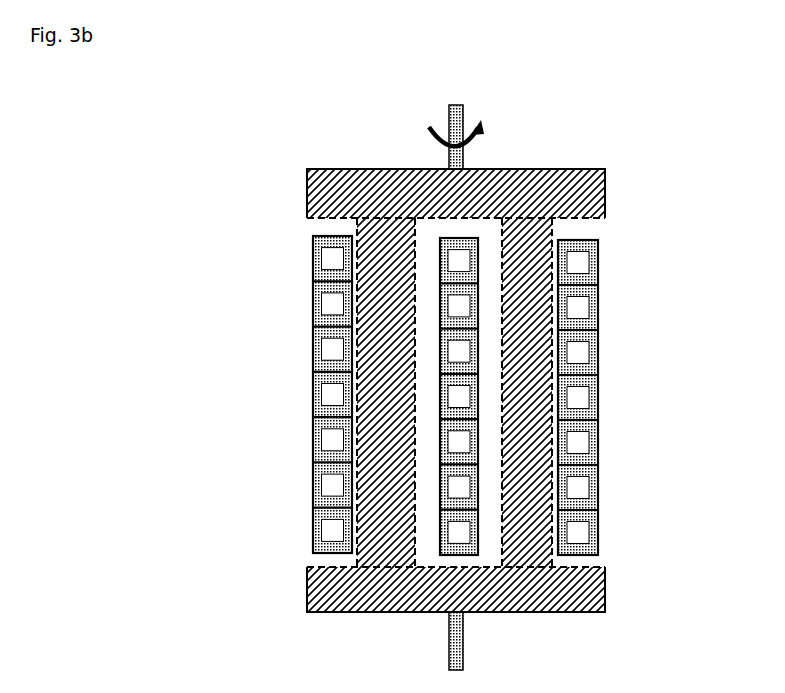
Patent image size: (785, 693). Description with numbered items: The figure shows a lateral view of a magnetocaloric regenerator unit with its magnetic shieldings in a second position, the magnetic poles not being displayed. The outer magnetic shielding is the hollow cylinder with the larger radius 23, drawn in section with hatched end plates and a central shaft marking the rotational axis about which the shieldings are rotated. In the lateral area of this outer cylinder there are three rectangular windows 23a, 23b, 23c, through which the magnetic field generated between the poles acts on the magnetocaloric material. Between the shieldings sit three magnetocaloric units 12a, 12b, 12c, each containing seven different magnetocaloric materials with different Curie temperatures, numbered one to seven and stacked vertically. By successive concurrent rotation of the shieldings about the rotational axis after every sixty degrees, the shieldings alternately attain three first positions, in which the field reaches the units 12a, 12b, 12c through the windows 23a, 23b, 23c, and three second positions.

The hollow cylinder with the larger radius 23 is at (330, 587).
The window 23a is at (356, 228).
The window 23b is at (412, 428).
The window 23c is at (557, 556).
The magnetocaloric unit 12a is at (308, 322).
The magnetocaloric unit 12b is at (482, 247).
The magnetocaloric unit 12c is at (598, 277).